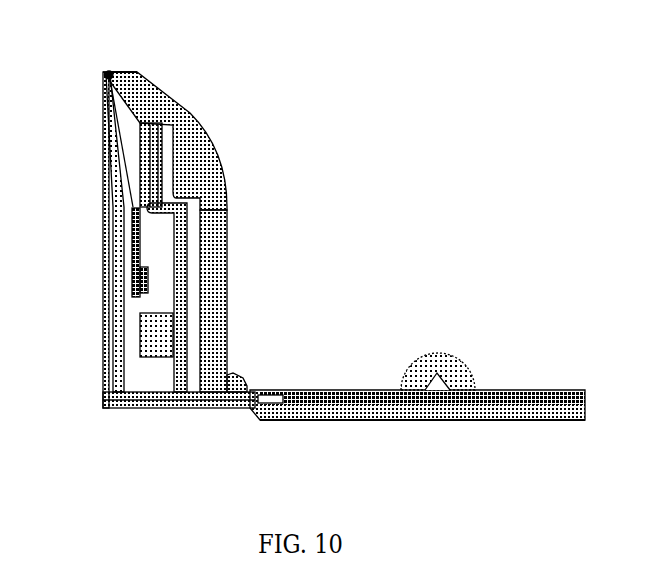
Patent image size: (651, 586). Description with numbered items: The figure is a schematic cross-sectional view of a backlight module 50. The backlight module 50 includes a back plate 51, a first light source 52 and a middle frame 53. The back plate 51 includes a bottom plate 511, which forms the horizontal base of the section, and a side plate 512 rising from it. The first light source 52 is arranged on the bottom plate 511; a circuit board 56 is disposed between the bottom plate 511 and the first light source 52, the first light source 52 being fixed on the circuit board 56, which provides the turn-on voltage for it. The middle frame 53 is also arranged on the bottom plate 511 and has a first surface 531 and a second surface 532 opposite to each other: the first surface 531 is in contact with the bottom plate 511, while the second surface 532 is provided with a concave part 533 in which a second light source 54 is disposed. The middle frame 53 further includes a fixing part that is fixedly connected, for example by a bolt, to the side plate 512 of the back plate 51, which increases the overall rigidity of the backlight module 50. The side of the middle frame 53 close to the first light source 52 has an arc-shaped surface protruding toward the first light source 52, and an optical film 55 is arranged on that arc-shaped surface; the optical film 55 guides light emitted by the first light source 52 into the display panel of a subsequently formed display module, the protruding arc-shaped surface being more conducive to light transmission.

The backlight module 50 is at (307, 255).
The back plate 51 is at (198, 400).
The bottom plate 511 is at (537, 418).
The side plate 512 is at (178, 235).
The first light source 52 is at (430, 370).
The middle frame 53 is at (217, 265).
The first surface 531 is at (229, 391).
The second surface 532 is at (128, 72).
The concave part 533 is at (106, 75).
The second light source 54 is at (109, 73).
The optical film 55 is at (183, 125).
The circuit board 56 is at (495, 400).